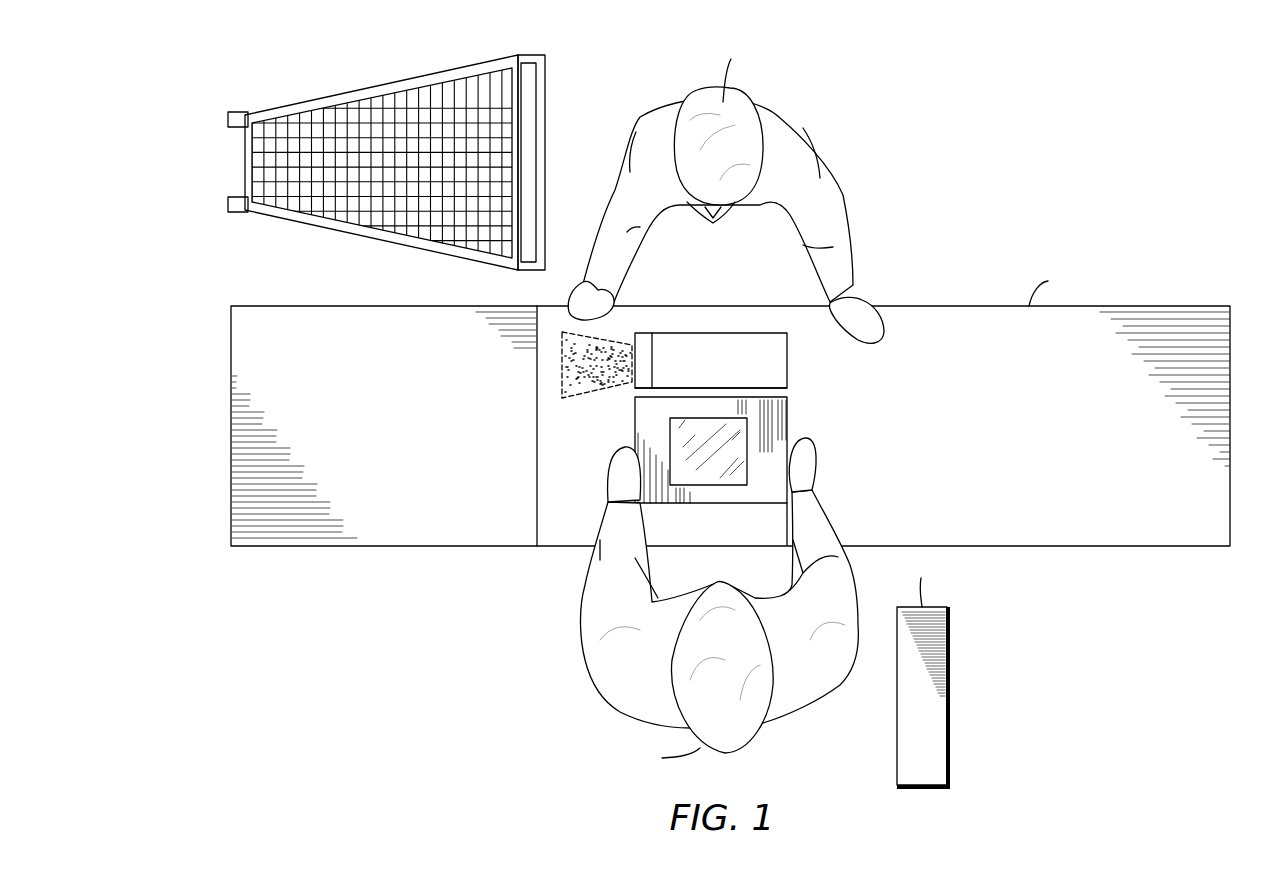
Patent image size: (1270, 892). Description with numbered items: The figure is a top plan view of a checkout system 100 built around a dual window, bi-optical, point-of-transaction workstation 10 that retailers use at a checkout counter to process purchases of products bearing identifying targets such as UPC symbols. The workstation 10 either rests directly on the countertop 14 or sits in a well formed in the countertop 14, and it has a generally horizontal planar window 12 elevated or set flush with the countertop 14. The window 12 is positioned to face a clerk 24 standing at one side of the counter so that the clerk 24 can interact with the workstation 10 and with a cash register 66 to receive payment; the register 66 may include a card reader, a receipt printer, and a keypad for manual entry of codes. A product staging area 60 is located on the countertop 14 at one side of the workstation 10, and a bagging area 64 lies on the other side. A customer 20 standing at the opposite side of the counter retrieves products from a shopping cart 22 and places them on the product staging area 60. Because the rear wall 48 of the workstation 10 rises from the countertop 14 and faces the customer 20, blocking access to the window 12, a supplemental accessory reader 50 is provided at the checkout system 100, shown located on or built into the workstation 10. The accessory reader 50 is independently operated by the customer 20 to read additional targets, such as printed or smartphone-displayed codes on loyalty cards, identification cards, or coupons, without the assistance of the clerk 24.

The checkout system 100 is at (872, 148).
The bi-optical point-of-transaction workstation 10 is at (729, 406).
The horizontal planar window 12 is at (705, 470).
The countertop 14 is at (1182, 330).
The customer 20 is at (780, 130).
The shopping cart 22 is at (332, 213).
The clerk 24 is at (792, 693).
The rear wall 48 is at (770, 332).
The accessory reader 50 is at (643, 380).
The product staging area 60 is at (1018, 493).
The bagging area 64 is at (253, 442).
The cash register 66 is at (950, 720).